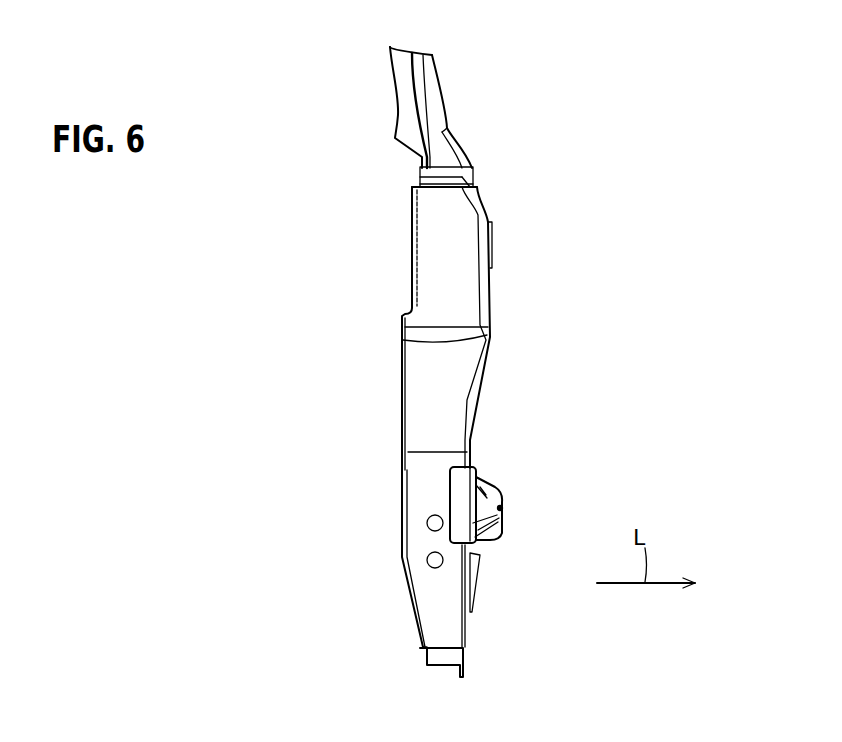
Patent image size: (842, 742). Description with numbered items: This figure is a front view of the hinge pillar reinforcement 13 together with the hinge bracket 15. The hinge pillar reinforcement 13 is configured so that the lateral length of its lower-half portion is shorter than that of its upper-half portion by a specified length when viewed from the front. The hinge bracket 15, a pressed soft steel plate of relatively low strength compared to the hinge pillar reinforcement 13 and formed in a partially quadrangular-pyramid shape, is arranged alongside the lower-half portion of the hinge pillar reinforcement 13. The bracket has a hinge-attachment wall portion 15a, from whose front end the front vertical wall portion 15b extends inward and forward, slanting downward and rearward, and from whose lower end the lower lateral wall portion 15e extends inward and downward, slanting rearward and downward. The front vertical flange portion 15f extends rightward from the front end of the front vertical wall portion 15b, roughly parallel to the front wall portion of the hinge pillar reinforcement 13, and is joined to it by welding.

The hinge pillar reinforcement 13 is at (482, 192).
The hinge bracket 15 is at (504, 485).
The hinge-attachment wall portion 15a is at (503, 517).
The front vertical wall portion 15b is at (483, 497).
The lower lateral wall portion 15e is at (490, 538).
The front vertical flange portion 15f is at (453, 478).